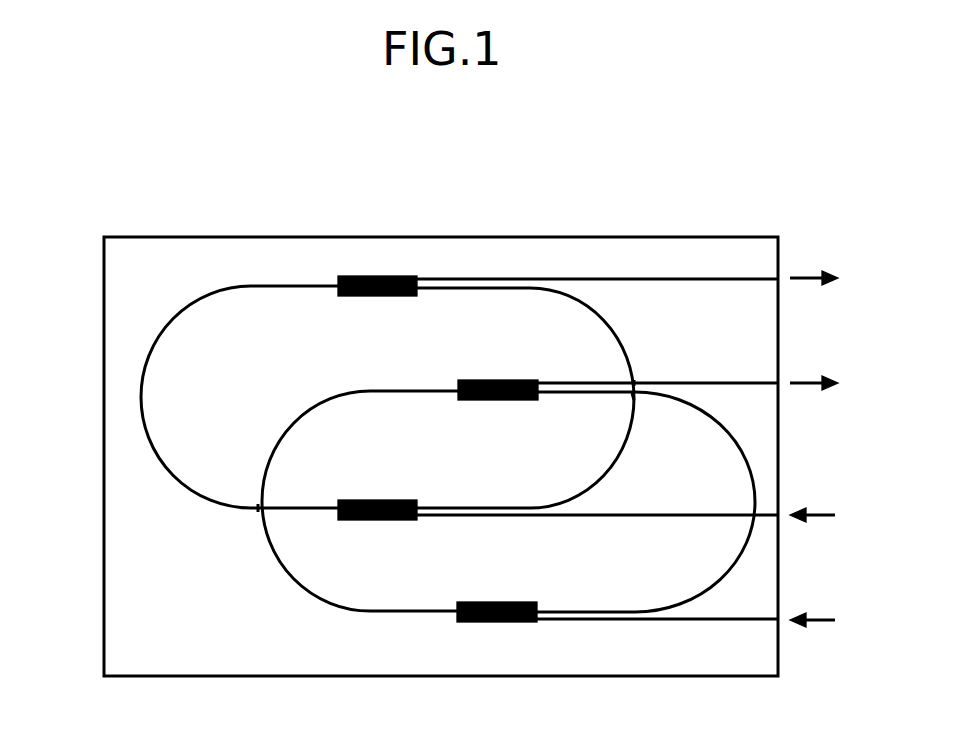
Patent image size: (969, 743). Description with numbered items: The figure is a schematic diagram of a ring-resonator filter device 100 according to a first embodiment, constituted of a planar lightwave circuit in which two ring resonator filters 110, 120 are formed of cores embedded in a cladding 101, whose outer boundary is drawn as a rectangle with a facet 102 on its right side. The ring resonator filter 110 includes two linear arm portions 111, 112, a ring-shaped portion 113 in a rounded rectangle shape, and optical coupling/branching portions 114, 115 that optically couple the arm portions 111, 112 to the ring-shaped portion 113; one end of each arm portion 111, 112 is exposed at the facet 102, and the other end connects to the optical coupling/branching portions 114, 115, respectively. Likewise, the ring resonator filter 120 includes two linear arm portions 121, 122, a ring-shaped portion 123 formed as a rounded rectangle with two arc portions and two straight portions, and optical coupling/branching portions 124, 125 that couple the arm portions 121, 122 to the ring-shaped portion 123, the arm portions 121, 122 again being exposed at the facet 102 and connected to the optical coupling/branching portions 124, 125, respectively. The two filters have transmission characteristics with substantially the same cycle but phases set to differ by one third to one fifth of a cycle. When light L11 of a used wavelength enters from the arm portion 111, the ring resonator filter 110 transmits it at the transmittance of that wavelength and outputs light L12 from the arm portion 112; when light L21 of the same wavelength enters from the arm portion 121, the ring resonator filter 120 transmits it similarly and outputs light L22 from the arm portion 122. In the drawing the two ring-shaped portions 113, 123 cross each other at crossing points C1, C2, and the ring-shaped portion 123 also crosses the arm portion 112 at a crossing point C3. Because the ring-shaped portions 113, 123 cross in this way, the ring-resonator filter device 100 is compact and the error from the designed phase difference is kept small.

The ring-resonator filter device 100 is at (711, 186).
The cladding 101 is at (668, 655).
The facet 102 is at (780, 656).
The ring resonator filter 110 is at (449, 626).
The arm portion 111 is at (730, 620).
The arm portion 112 is at (732, 383).
The ring-shaped portion 113 is at (286, 576).
The optical coupling/branching portion 114 is at (498, 623).
The optical coupling/branching portion 115 is at (500, 379).
The ring resonator filter 120 is at (459, 272).
The arm portion 121 is at (663, 514).
The arm portion 122 is at (657, 277).
The ring-shaped portion 123 is at (184, 487).
The optical coupling/branching portion 124 is at (378, 500).
The optical coupling/branching portion 125 is at (380, 276).
The crossing point C1 is at (253, 513).
The crossing point C2 is at (628, 396).
The crossing point C3 is at (640, 378).
The light L11 is at (818, 620).
The light L12 is at (808, 383).
The light L21 is at (820, 515).
The light L22 is at (806, 277).